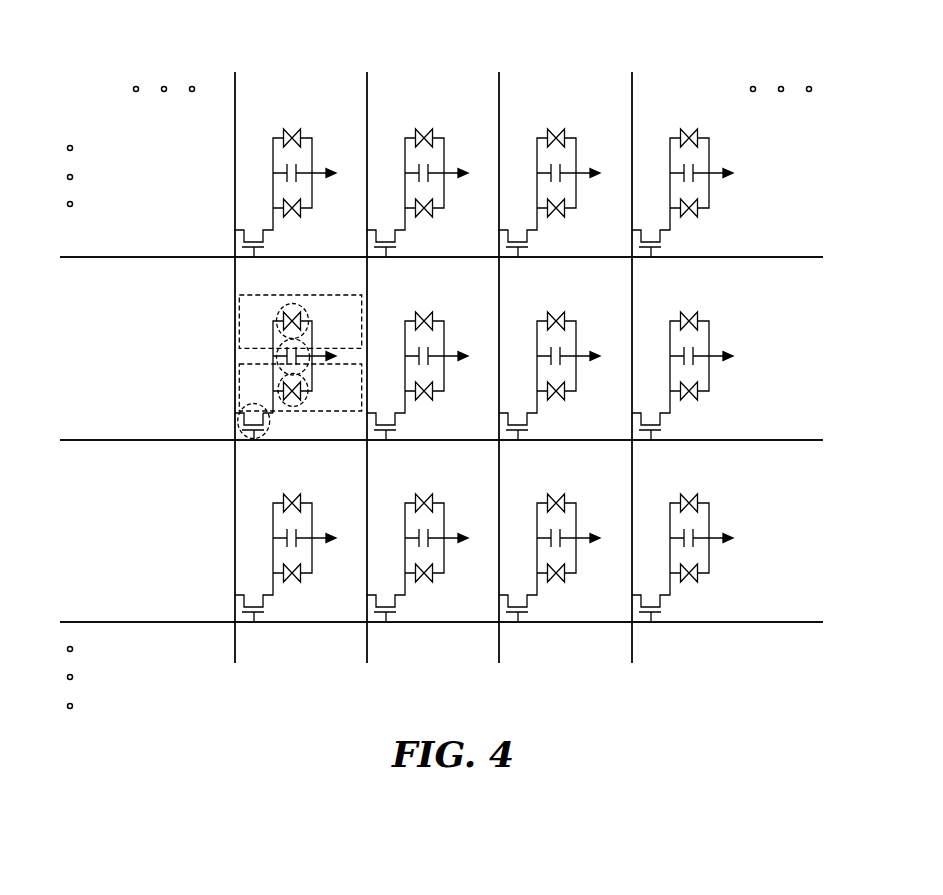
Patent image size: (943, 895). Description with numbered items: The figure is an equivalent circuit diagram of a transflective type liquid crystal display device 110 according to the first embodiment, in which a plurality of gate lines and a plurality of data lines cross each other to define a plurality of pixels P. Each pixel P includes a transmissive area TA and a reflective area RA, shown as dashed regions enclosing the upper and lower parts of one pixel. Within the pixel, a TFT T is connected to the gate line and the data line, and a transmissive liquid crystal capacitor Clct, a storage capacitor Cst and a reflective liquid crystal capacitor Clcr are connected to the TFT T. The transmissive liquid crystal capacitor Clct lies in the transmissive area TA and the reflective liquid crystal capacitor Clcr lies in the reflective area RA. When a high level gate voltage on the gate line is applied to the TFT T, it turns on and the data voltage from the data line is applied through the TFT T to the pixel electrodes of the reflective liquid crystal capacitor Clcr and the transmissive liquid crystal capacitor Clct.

The transflective type liquid crystal display device 110 is at (448, 28).
The pixel P is at (127, 327).
The TFT T is at (237, 421).
The transmissive area TA is at (239, 313).
The reflective area RA is at (239, 398).
The transmissive liquid crystal capacitor Clct is at (278, 312).
The reflective liquid crystal capacitor Clcr is at (279, 382).
The storage capacitor Cst is at (279, 342).